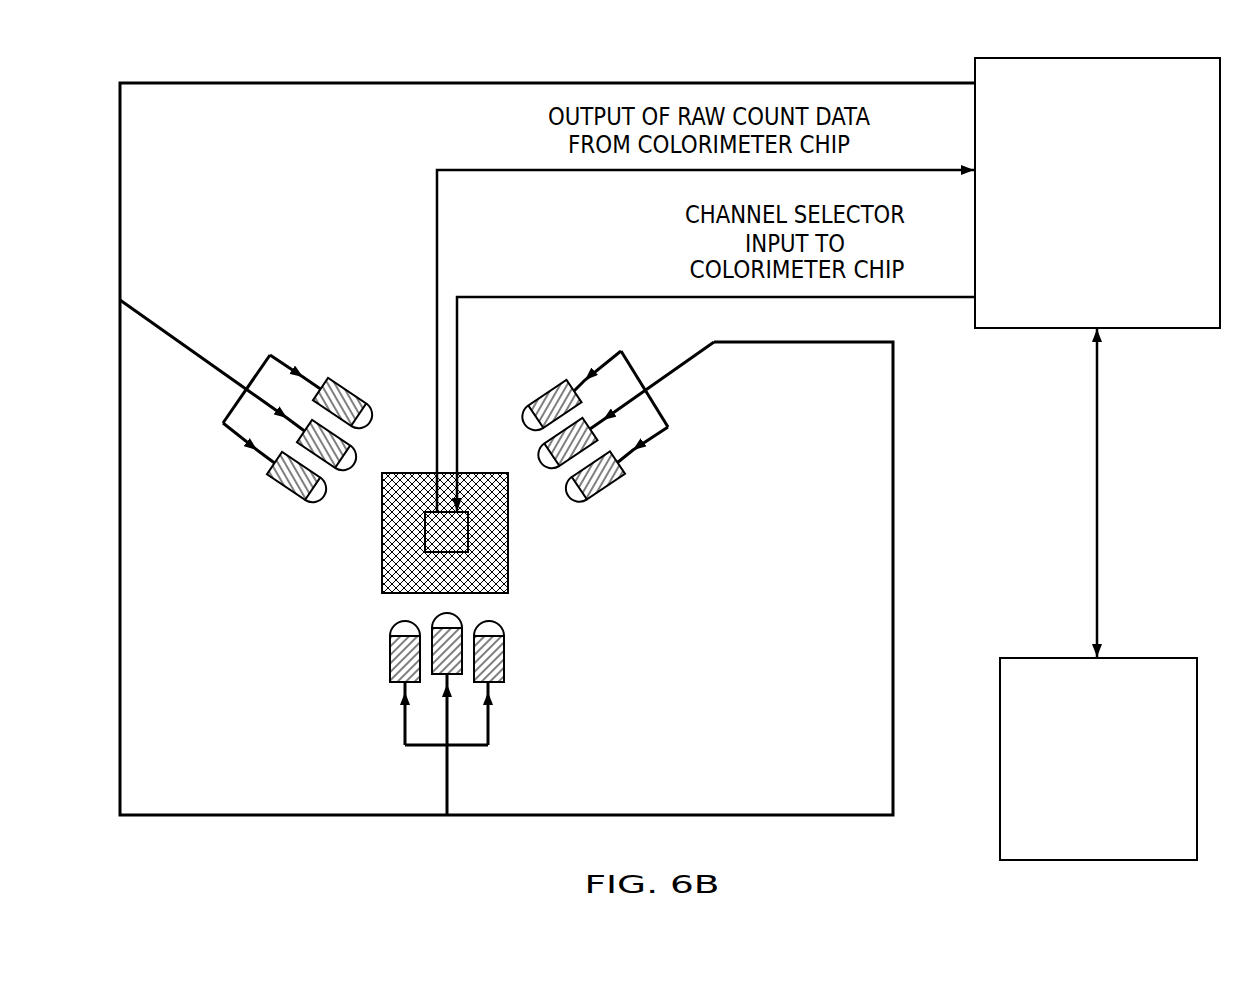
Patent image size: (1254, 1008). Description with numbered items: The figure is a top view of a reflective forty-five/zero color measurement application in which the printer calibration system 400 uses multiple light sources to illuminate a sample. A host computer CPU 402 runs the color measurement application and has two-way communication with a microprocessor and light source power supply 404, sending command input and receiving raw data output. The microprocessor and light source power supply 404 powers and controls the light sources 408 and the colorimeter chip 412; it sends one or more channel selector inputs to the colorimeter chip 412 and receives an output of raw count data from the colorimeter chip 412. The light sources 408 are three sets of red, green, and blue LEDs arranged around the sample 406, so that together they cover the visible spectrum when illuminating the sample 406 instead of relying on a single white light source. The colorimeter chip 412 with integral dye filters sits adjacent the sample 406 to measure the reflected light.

The printer calibration system 400 is at (112, 40).
The host computer CPU 402 is at (1077, 713).
The microprocessor and light source power supply 404 is at (1077, 140).
The sample 406 is at (620, 545).
The light sources 408 is at (417, 557).
The colorimeter chip 412 is at (627, 624).